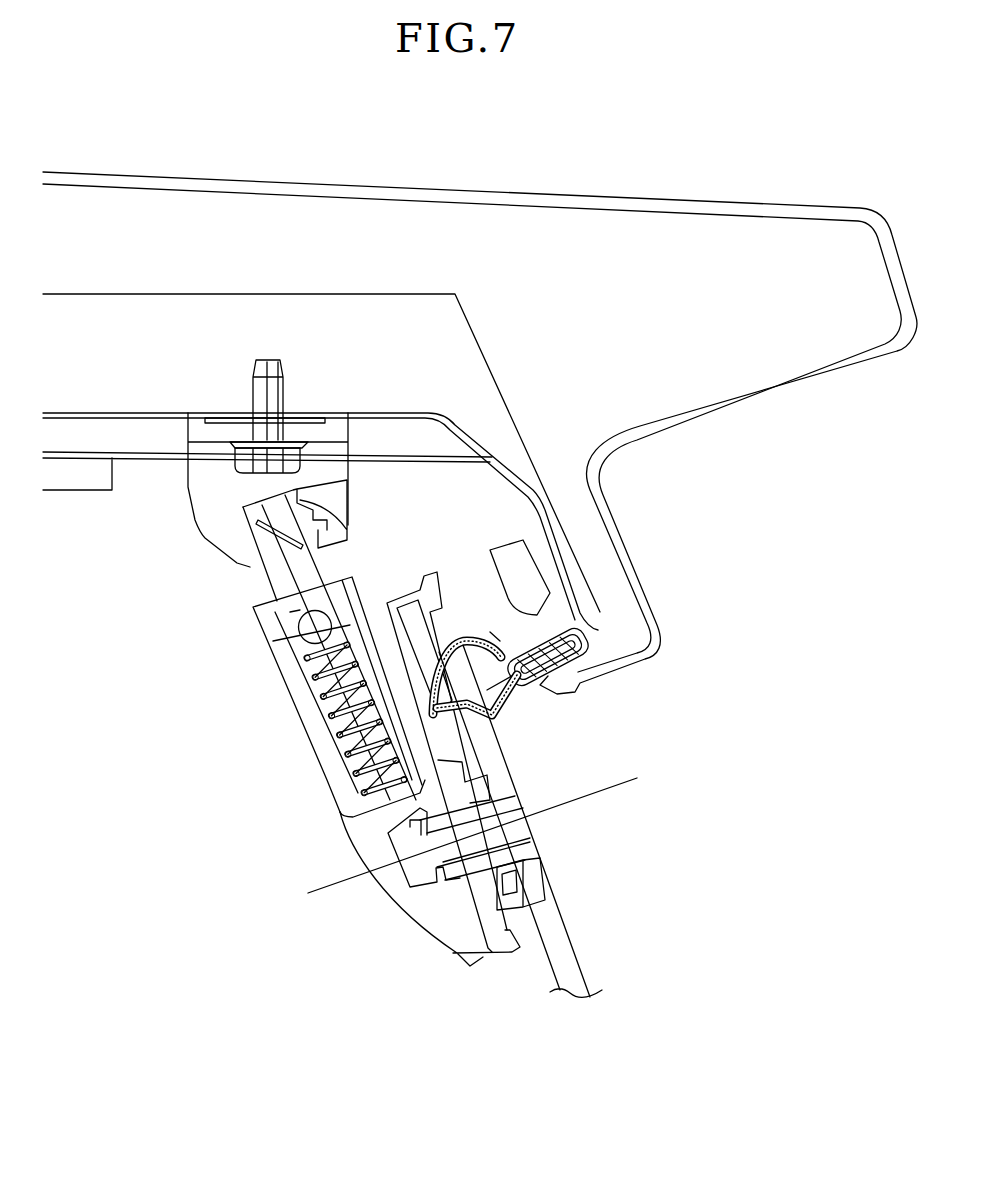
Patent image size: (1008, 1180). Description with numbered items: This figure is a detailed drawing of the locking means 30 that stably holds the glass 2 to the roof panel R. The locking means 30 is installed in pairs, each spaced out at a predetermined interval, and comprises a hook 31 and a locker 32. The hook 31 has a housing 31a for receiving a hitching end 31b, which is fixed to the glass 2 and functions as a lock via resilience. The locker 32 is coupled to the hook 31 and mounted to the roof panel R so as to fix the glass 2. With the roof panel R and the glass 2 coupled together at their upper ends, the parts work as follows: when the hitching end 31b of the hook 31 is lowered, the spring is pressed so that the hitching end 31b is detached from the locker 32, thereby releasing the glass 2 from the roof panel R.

The roof panel R is at (351, 376).
The glass 2 is at (567, 943).
The locking means 30 is at (297, 814).
The hook 31 is at (137, 663).
The housing 31a is at (317, 751).
The hitching end 31b is at (267, 568).
The locker 32 is at (217, 530).